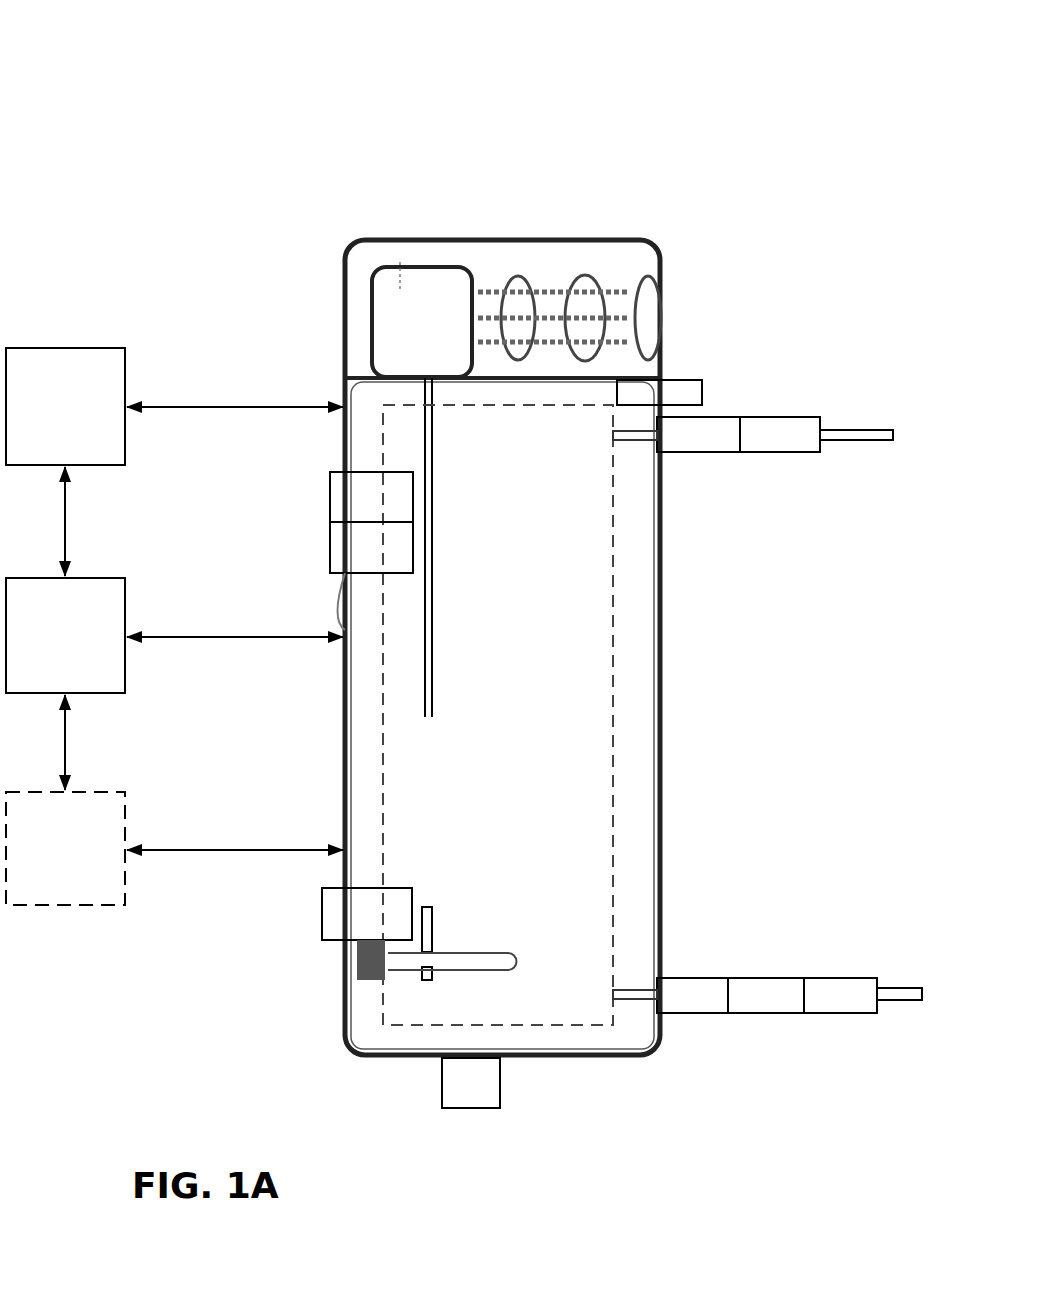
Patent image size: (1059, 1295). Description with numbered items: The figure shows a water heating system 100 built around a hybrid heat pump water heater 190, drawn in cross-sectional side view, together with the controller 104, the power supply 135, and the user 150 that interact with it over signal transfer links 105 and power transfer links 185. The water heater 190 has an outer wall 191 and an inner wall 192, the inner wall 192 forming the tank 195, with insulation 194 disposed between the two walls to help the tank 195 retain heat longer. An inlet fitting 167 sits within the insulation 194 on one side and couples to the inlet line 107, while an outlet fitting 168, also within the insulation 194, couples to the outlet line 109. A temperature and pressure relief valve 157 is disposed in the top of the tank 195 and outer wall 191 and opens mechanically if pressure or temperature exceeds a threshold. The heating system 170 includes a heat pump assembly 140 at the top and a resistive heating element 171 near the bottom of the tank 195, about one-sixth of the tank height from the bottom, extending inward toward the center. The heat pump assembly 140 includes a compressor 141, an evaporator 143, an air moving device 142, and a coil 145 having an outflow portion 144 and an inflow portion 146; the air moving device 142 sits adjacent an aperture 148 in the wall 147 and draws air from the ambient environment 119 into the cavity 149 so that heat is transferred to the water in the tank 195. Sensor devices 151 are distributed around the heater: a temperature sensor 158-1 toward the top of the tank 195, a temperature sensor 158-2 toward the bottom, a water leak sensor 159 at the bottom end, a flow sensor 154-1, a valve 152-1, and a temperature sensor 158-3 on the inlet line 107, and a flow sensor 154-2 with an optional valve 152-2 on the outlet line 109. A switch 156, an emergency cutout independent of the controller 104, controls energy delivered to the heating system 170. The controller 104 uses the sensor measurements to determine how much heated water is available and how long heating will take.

The water heating system 100 is at (466, 586).
The heat pump assembly 140 is at (485, 608).
The wall 147 is at (502, 284).
The outer wall 191 is at (567, 715).
The compressor 141 is at (368, 301).
The cavity 149 is at (367, 252).
The evaporator 143 is at (592, 286).
The aperture 148 is at (711, 301).
The air moving device 142 is at (708, 318).
The ambient environment 119 is at (759, 300).
The inflow portion 146 is at (491, 547).
The tank 195 is at (498, 715).
The coil 145 is at (498, 560).
The inner wall 192 is at (699, 715).
The insulation 194 is at (688, 725).
The outflow portion 144 is at (612, 816).
The temperature and pressure relief valve 157 is at (659, 392).
The flow sensor 154-2 is at (698, 434).
The valve 152-2 is at (780, 434).
The outlet line 109 is at (820, 412).
The outlet fitting 168 is at (706, 468).
The switch 156 is at (371, 497).
The temperature sensor 158-1 is at (371, 576).
The temperature sensor 158-2 is at (367, 914).
The resistive heating element 171 is at (304, 993).
The heating system 170 is at (589, 546).
The water leak sensor 159 is at (471, 1083).
The flow sensor 154-1 is at (692, 995).
The valve 152-1 is at (766, 995).
The temperature sensor 158-3 is at (840, 995).
The inlet line 107 is at (851, 971).
The inlet fitting 167 is at (706, 1028).
The sensor devices 151 is at (487, 744).
The water heater 190 is at (176, 582).
The power supply 135 is at (65, 406).
The controller 104 is at (65, 635).
The user 150 is at (65, 848).
The signal transfer links 105 is at (204, 628).
The power transfer links 185 is at (205, 628).